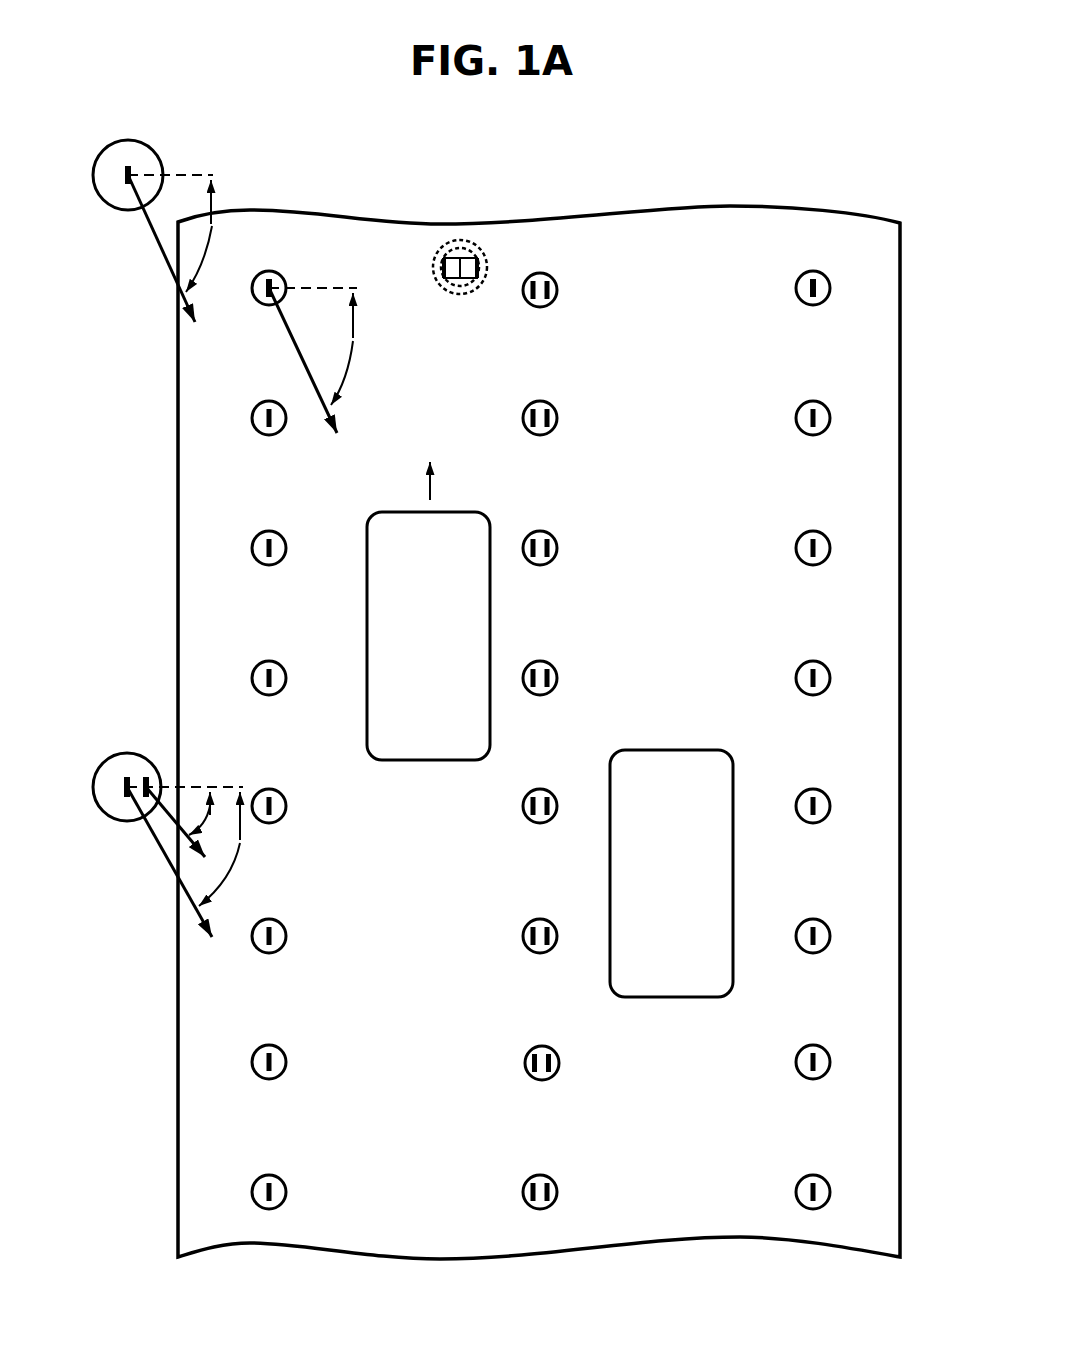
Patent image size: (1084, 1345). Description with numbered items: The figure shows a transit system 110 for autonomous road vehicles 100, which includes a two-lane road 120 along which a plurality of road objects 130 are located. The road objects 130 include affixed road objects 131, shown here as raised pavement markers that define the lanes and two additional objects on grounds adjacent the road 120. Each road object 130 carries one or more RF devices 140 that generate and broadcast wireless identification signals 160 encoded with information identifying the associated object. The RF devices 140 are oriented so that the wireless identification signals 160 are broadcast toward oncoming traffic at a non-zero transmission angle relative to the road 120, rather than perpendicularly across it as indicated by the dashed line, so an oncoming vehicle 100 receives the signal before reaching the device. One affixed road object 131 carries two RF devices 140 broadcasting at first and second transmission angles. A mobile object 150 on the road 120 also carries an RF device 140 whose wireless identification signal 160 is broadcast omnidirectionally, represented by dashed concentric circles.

The autonomous road vehicle 100 is at (451, 702).
The transit system 110 is at (845, 166).
The road 120 is at (704, 208).
The road object 130 is at (153, 140).
The affixed road object 131 is at (96, 186).
The RF device 140 is at (124, 174).
The mobile object 150 is at (486, 262).
The wireless identification signal 160 is at (157, 246).